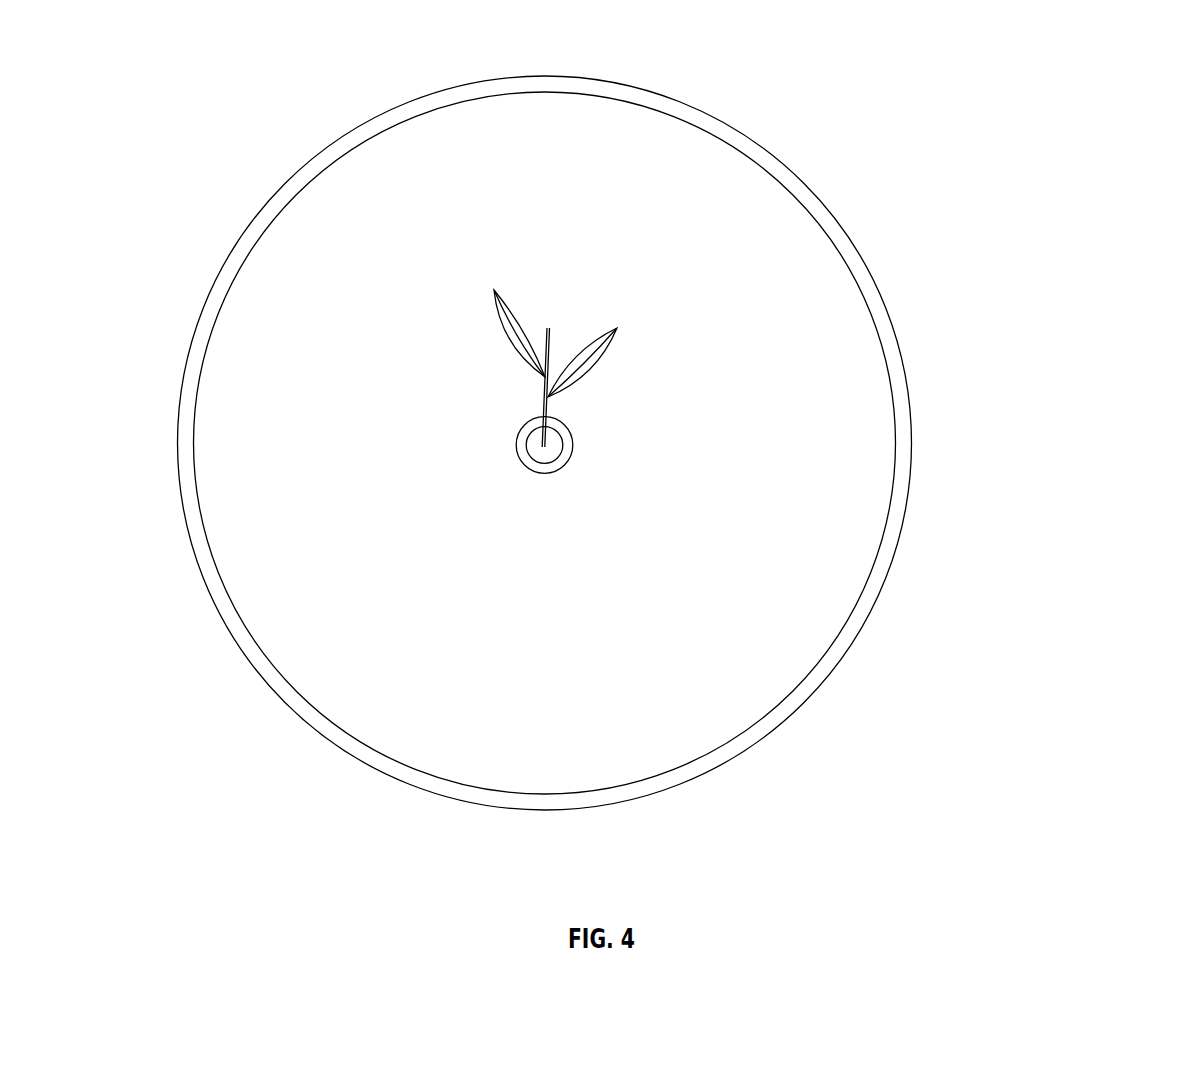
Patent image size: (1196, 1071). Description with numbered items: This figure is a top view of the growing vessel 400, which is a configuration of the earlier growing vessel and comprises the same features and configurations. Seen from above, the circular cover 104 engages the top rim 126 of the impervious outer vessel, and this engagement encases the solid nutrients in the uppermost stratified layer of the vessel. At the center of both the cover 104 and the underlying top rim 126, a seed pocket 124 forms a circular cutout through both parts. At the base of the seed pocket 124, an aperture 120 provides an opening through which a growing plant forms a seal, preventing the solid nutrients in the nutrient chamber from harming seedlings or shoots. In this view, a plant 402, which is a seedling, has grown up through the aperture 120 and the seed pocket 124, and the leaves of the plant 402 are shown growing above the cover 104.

The growing vessel 400 is at (1075, 101).
The cover 104 is at (569, 240).
The top rim 126 is at (887, 338).
The seed pocket 124 is at (573, 445).
The aperture 120 is at (525, 435).
The plant 402 is at (543, 398).